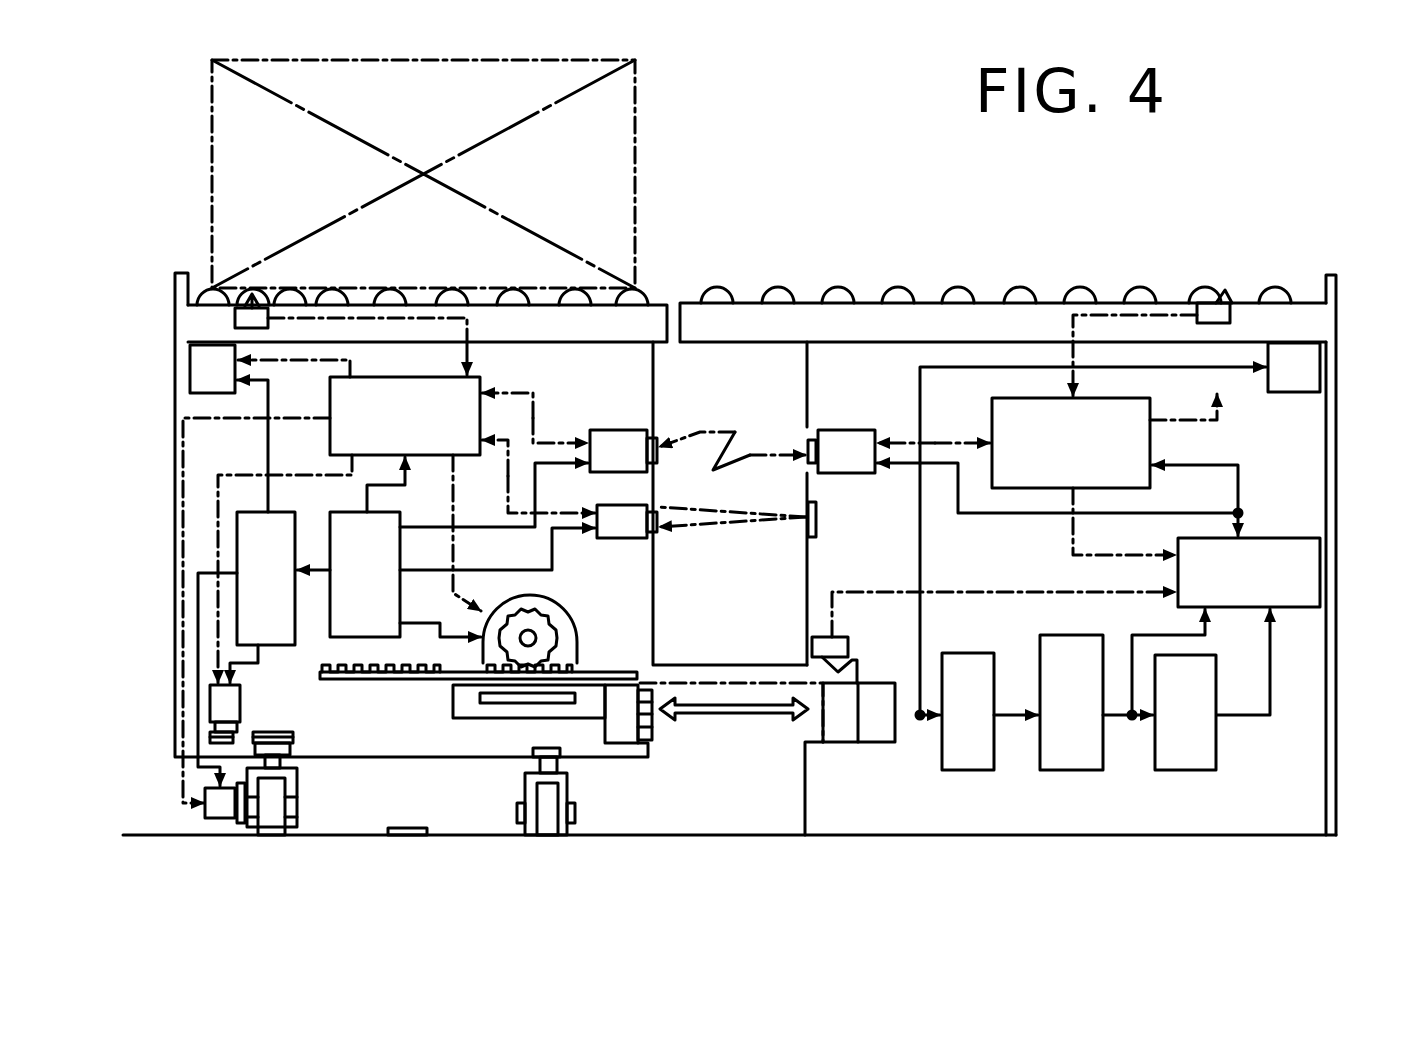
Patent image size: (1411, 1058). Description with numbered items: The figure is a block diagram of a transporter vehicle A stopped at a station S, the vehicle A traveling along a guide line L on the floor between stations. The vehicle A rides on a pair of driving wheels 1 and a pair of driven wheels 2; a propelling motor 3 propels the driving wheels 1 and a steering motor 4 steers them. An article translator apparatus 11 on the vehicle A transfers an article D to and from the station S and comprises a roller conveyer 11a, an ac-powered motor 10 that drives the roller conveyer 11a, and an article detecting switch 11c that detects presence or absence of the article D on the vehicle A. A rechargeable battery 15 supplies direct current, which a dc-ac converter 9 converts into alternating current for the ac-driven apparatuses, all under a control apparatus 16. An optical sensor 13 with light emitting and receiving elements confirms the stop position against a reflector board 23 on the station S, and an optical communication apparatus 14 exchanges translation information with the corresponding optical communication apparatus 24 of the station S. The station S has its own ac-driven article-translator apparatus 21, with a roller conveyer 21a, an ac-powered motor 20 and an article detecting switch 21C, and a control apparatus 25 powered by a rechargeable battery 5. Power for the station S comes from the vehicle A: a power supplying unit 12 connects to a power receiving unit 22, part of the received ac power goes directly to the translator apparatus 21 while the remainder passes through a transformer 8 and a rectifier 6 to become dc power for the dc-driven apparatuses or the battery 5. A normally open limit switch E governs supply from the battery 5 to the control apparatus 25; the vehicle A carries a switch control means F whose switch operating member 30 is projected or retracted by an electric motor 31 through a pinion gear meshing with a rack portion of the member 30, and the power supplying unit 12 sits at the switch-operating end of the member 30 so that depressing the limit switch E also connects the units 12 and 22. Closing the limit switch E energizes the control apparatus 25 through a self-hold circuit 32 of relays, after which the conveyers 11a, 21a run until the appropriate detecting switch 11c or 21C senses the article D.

The driving wheels 1 is at (274, 830).
The driven wheels 2 is at (548, 832).
The propelling motor 3 is at (222, 818).
The steering motor 4 is at (230, 706).
The rechargeable battery 5 is at (1217, 752).
The rectifier 6 is at (1058, 770).
The transformer 8 is at (980, 770).
The dc-ac converter 9 is at (282, 512).
The ac-powered motor 10 is at (202, 375).
The article translator apparatus 11 is at (663, 298).
The roller conveyer 11a is at (450, 300).
The article detecting switch 11c is at (256, 298).
The power supplying unit 12 is at (625, 742).
The optical sensor 13 is at (620, 551).
The optical communication apparatus 14 is at (620, 445).
The rechargeable battery 15 is at (378, 640).
The control apparatus 16 is at (482, 382).
The ac-powered motor 20 is at (1290, 368).
The ac-driven article-translator apparatus 21 is at (933, 296).
The roller conveyer 21a is at (1072, 296).
The article detecting switch 21C is at (1222, 292).
The power receiving unit 22 is at (880, 742).
The reflector board 23 is at (806, 520).
The optical communication apparatus 24 is at (845, 452).
The control apparatus 25 is at (1150, 432).
The switch operating member 30 is at (612, 665).
The electric motor 31 is at (578, 628).
The self-hold circuit 32 is at (1280, 565).
The transporter vehicle A is at (170, 480).
The article D is at (640, 110).
The limit switch E is at (845, 652).
The switch control means F is at (529, 637).
The guide line L is at (400, 828).
The station S is at (1342, 474).